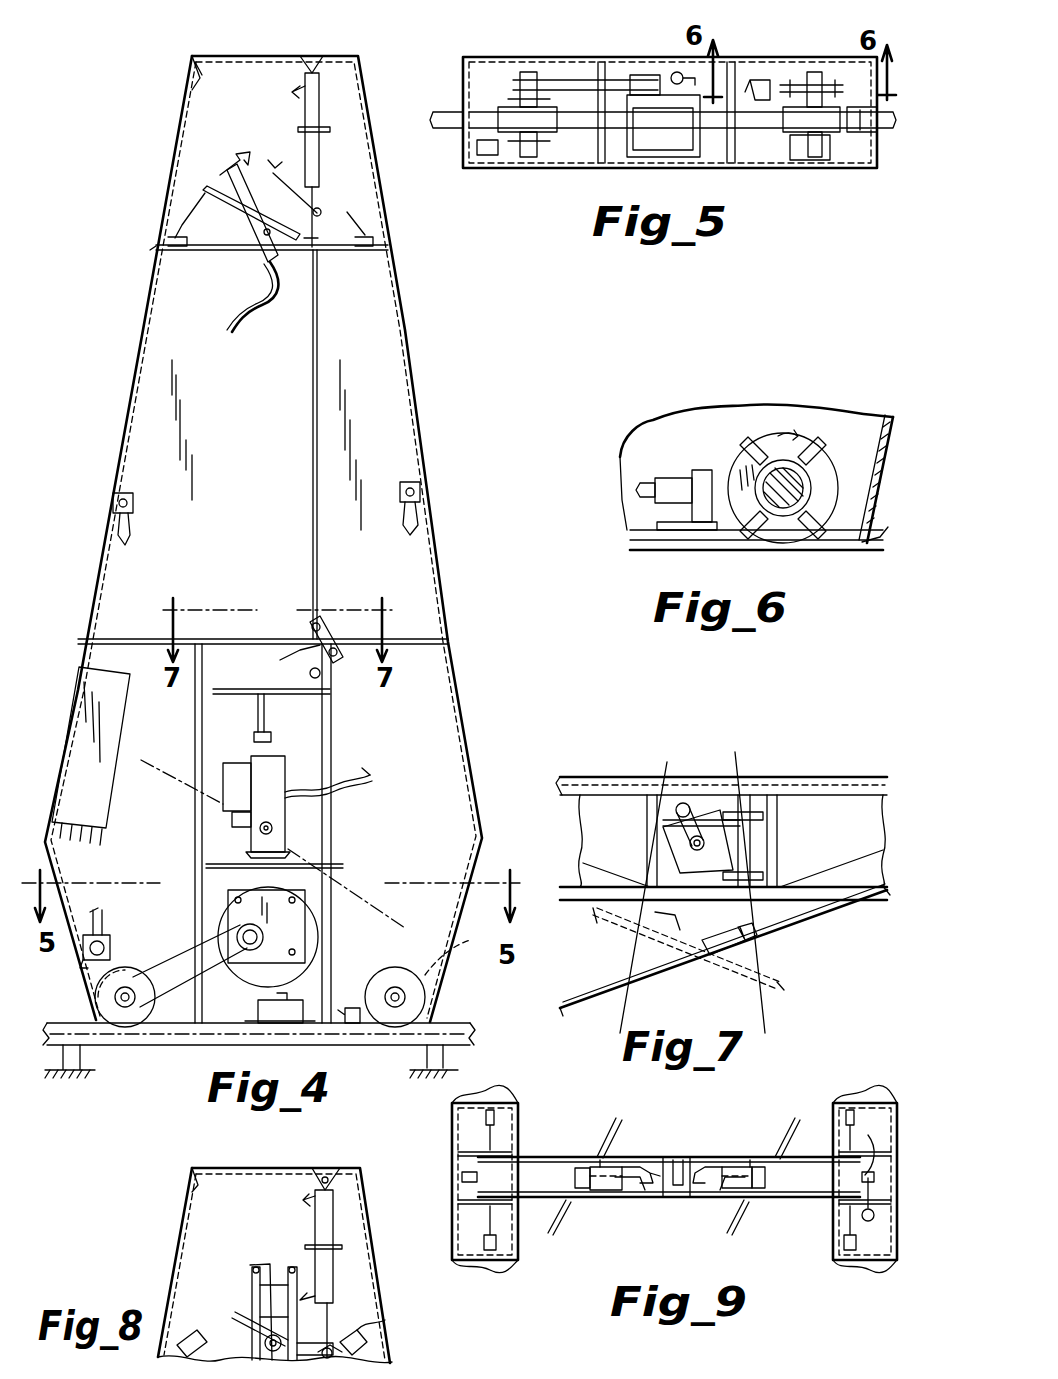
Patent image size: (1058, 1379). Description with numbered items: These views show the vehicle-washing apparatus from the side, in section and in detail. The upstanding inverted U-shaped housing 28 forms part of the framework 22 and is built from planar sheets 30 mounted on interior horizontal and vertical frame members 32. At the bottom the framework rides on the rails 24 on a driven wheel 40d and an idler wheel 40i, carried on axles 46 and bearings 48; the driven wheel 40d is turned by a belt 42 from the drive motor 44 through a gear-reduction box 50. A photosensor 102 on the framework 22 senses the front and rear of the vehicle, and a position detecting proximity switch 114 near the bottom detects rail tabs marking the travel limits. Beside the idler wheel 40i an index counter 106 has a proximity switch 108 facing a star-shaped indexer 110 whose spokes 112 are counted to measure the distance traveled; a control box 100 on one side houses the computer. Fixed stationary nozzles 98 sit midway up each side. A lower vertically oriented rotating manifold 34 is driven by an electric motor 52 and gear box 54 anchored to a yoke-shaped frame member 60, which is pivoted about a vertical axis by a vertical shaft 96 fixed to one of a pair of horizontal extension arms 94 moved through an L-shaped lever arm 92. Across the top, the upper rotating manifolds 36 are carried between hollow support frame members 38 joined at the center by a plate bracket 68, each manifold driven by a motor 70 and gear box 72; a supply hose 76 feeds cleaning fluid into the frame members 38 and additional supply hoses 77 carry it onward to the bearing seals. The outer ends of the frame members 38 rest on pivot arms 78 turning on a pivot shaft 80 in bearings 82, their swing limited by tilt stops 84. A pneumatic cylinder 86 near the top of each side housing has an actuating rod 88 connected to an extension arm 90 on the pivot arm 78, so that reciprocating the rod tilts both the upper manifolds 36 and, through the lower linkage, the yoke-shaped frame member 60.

In FIG. 4, the framework 22 is at (406, 333).
In FIG. 4, the rails 24 is at (408, 1045).
In FIG. 6, the rails 24 is at (640, 538).
In FIG. 4, the housing 28 is at (137, 360).
In FIG. 5, the housing 28 is at (612, 62).
In FIG. 6, the housing 28 is at (882, 425).
In FIG. 8, the housing 28 is at (192, 1190).
In FIG. 4, the planar sheets 30 is at (195, 66).
In FIG. 6, the planar sheets 30 is at (880, 550).
In FIG. 7, the planar sheets 30 is at (822, 777).
In FIG. 8, the planar sheets 30 is at (368, 1245).
In FIG. 4, the frame members 32 is at (200, 256).
In FIG. 5, the frame members 32 is at (600, 168).
In FIG. 7, the frame members 32 is at (640, 777).
In FIG. 7, the rotating manifolds 34 is at (660, 965).
In FIG. 9, the rotating manifolds 36 is at (558, 1225).
In FIG. 4, the frame members 38 is at (205, 192).
In FIG. 8, the frame members 38 is at (258, 1267).
In FIG. 9, the frame members 38 is at (550, 1210).
In FIG. 4, the driven wheel 40d is at (138, 1012).
In FIG. 5, the driven wheel 40d is at (515, 118).
In FIG. 4, the idler wheel 40i is at (398, 1022).
In FIG. 5, the idler wheel 40i is at (848, 165).
In FIG. 4, the belt 42 is at (180, 940).
In FIG. 4, the drive motor 44 is at (232, 890).
In FIG. 4, the axles 46 is at (125, 1008).
In FIG. 5, the axles 46 is at (525, 160).
In FIG. 4, the bearings 48 is at (128, 972).
In FIG. 5, the bearings 48 is at (803, 165).
In FIG. 4, the gear-reduction box 50 is at (242, 932).
In FIG. 4, the electric motor 52 is at (240, 765).
In FIG. 4, the gear box 54 is at (228, 812).
In FIG. 4, the yoke-shaped frame member 60 is at (292, 760).
In FIG. 9, the plate bracket 68 is at (681, 1200).
In FIG. 9, the motor 70 is at (598, 1167).
In FIG. 9, the gear box 72 is at (582, 1168).
In FIG. 4, the supply hose 76 is at (232, 318).
In FIG. 9, the supply hose 76 is at (855, 1112).
In FIG. 9, the supply hoses 77 is at (647, 1197).
In FIG. 4, the pivot arms 78 is at (248, 155).
In FIG. 8, the pivot arms 78 is at (232, 1302).
In FIG. 4, the pivot shaft 80 is at (319, 211).
In FIG. 8, the pivot shaft 80 is at (320, 1310).
In FIG. 4, the bearings 82 is at (282, 168).
In FIG. 8, the bearings 82 is at (275, 1340).
In FIG. 4, the tilt stops 84 is at (185, 205).
In FIG. 8, the tilt stops 84 is at (360, 1334).
In FIG. 4, the pneumatic cylinders 86 is at (290, 90).
In FIG. 8, the pneumatic cylinders 86 is at (300, 1220).
In FIG. 4, the actuating rod 88 is at (320, 318).
In FIG. 4, the extension arm 90 is at (318, 248).
In FIG. 8, the extension arm 90 is at (345, 1352).
In FIG. 4, the L-shaped lever arm 92 is at (330, 630).
In FIG. 4, the horizontal extension arms 94 is at (300, 689).
In FIG. 7, the horizontal extension arms 94 is at (698, 810).
In FIG. 4, the vertical shaft 96 is at (250, 704).
In FIG. 4, the stationary nozzles 98 is at (118, 492).
In FIG. 4, the control box 100 is at (80, 702).
In FIG. 4, the photosensor 102 is at (84, 970).
In FIG. 5, the photosensor 102 is at (482, 147).
In FIG. 5, the index counter 106 is at (800, 70).
In FIG. 6, the index counter 106 is at (807, 371).
In FIG. 6, the proximity switch 108 is at (695, 490).
In FIG. 6, the star-shaped indexer 110 is at (793, 540).
In FIG. 6, the spokes 112 is at (760, 445).
In FIG. 4, the position detecting proximity switch 114 is at (252, 1030).
In FIG. 5, the position detecting proximity switch 114 is at (678, 72).